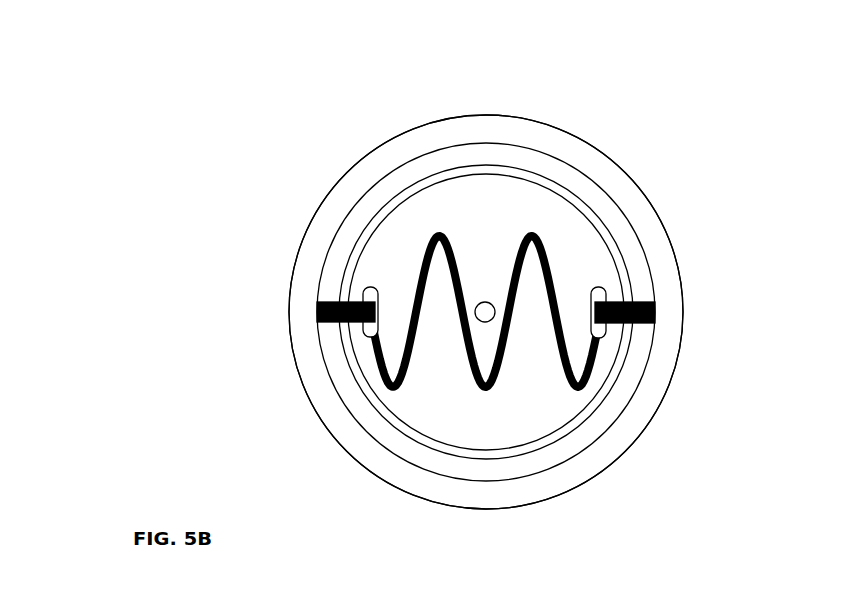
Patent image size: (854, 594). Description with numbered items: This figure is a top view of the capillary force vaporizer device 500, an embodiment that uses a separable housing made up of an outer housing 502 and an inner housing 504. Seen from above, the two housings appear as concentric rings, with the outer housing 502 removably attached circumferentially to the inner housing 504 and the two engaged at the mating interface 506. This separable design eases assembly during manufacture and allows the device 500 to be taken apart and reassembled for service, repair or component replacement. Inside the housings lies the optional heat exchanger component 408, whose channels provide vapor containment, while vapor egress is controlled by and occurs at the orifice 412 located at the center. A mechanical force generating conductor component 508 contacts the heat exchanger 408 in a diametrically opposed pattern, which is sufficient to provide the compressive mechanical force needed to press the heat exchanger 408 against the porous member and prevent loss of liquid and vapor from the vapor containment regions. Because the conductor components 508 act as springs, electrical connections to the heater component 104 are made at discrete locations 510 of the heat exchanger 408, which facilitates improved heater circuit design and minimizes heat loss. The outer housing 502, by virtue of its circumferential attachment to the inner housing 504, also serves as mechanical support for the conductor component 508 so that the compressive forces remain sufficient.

The capillary force vaporizer device 500 is at (226, 60).
The outer housing 502 is at (603, 173).
The inner housing 504 is at (545, 167).
The mating interface 506 is at (507, 146).
The heat exchanger component 408 is at (582, 263).
The heater component 104 is at (495, 390).
The discrete locations 510 is at (370, 292).
The mechanical force generating conductor component 508 is at (317, 313).
The orifice 412 is at (485, 306).